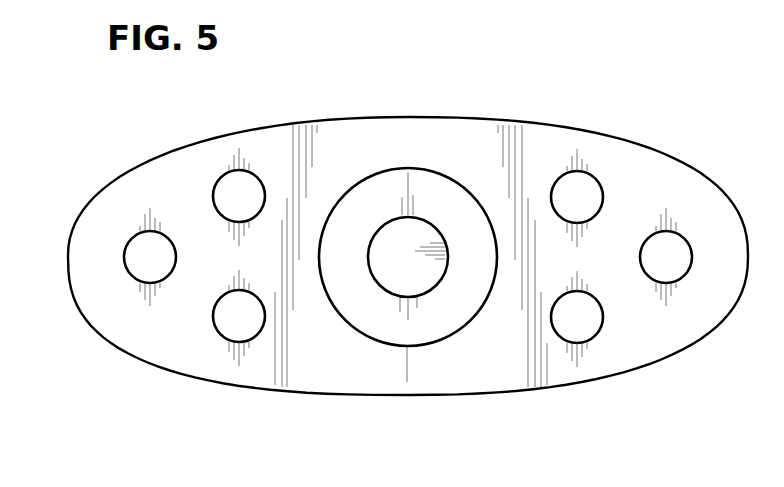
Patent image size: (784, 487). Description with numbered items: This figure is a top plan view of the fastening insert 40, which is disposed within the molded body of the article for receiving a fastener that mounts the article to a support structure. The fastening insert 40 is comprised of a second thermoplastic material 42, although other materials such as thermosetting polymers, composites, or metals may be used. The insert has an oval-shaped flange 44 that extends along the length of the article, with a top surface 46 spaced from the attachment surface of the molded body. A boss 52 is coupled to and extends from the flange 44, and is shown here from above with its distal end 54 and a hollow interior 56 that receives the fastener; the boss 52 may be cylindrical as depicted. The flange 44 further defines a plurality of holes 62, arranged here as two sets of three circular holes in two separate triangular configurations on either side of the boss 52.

The fastening insert 40 is at (90, 163).
The second thermoplastic material 42 is at (389, 377).
The flange 44 is at (638, 190).
The top surface 46 is at (102, 280).
The boss 52 is at (357, 183).
The distal end 54 is at (442, 197).
The hollow interior 56 is at (380, 224).
The holes 62 is at (223, 180).